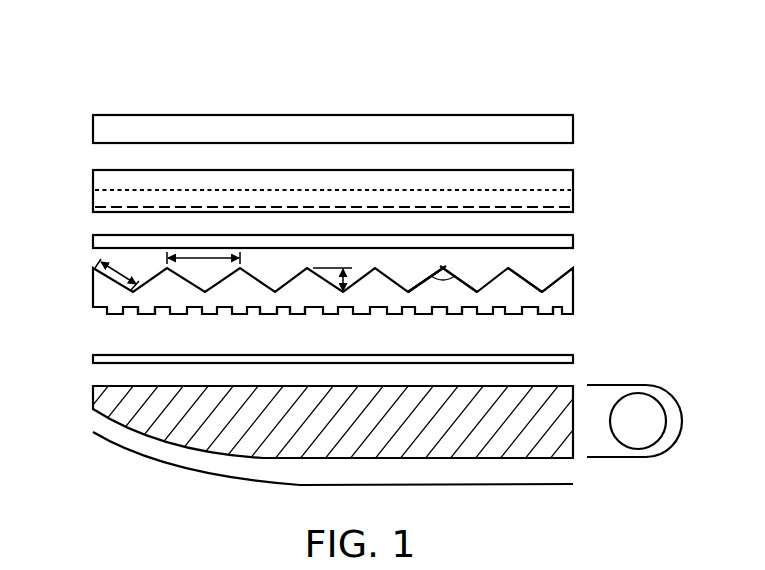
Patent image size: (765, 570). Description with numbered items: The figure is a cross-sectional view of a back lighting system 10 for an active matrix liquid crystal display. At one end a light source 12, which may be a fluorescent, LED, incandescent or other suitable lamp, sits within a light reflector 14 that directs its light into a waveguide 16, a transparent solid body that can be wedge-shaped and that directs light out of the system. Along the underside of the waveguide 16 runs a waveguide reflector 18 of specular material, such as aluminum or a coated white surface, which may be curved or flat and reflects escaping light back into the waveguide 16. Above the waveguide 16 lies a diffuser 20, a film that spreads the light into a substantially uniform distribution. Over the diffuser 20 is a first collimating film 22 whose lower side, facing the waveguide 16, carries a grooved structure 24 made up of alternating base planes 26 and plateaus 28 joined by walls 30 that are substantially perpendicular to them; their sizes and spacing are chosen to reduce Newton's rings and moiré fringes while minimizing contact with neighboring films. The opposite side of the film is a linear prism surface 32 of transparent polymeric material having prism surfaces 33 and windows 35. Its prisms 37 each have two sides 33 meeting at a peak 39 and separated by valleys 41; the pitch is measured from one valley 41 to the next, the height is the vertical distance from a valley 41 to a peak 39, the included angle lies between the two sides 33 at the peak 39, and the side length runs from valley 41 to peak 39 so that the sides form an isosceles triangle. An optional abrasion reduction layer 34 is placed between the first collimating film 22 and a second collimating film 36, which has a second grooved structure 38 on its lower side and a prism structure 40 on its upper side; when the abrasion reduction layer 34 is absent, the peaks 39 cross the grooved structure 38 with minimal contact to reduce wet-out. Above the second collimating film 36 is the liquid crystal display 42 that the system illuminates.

The back lighting system 10 is at (581, 63).
The light source 12 is at (638, 440).
The light reflector 14 is at (637, 384).
The waveguide 16 is at (93, 392).
The waveguide reflector 18 is at (122, 455).
The diffuser 20 is at (93, 360).
The first collimating film 22 is at (93, 291).
The grooved structure 24 is at (562, 318).
The base planes 26 is at (288, 313).
The plateaus 28 is at (140, 313).
The walls 30 is at (307, 311).
The linear prism surface 32 is at (583, 270).
The prism sides 33 is at (418, 286).
The abrasion reduction layer 34 is at (93, 243).
The windows 35 is at (514, 292).
The second collimating film 36 is at (93, 184).
The prisms 37 is at (457, 296).
The second grooved structure 38 is at (175, 212).
The peak 39 is at (443, 268).
The prism structure 40 is at (223, 170).
The valleys 41 is at (412, 292).
The liquid crystal display 42 is at (575, 131).